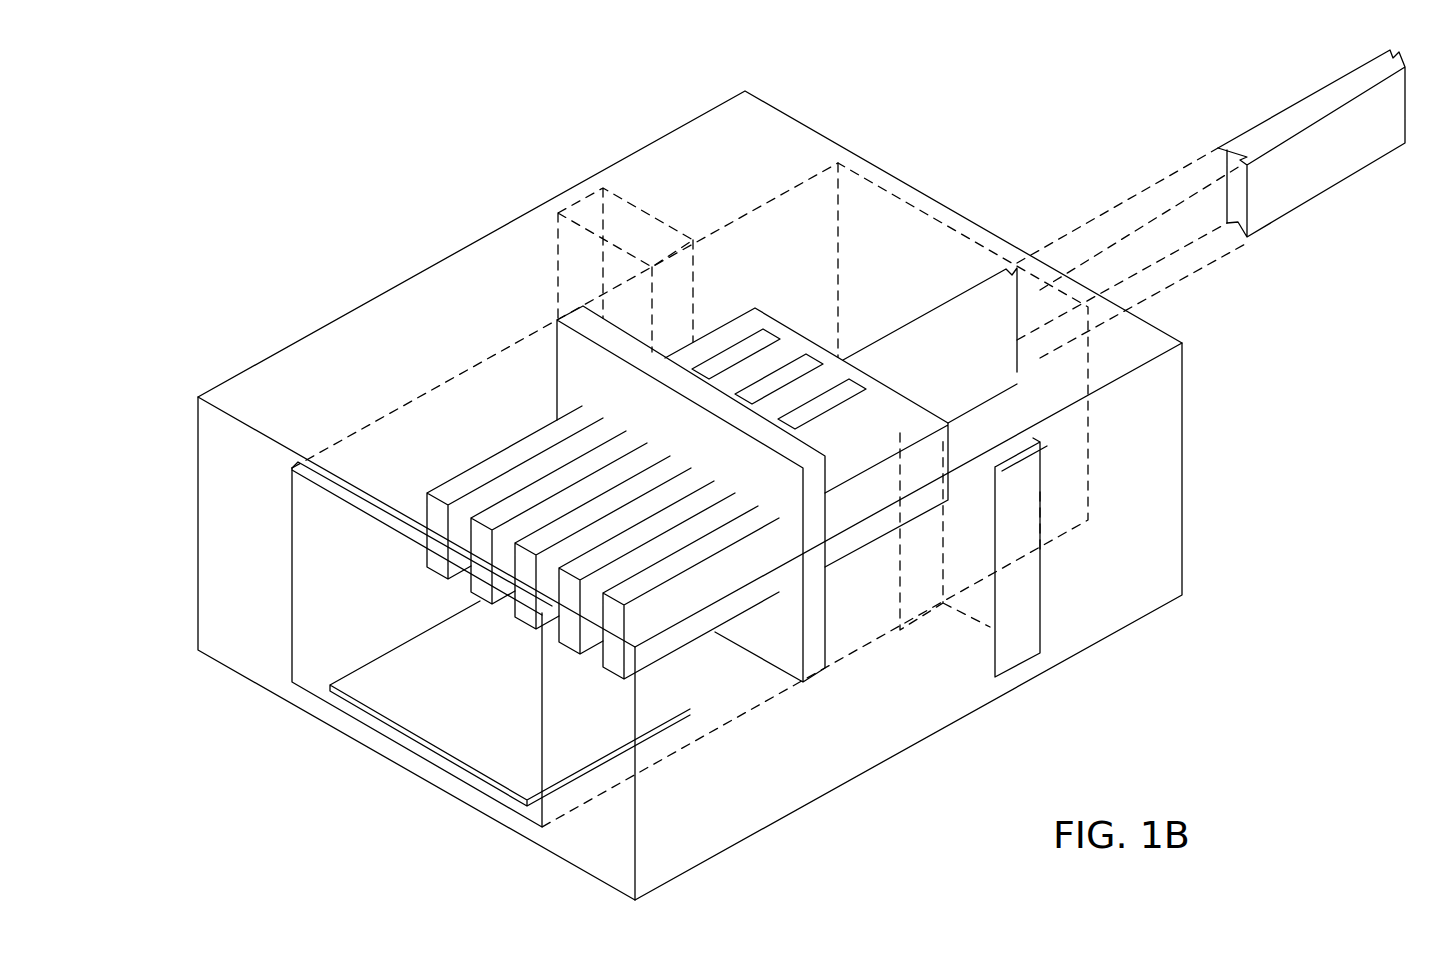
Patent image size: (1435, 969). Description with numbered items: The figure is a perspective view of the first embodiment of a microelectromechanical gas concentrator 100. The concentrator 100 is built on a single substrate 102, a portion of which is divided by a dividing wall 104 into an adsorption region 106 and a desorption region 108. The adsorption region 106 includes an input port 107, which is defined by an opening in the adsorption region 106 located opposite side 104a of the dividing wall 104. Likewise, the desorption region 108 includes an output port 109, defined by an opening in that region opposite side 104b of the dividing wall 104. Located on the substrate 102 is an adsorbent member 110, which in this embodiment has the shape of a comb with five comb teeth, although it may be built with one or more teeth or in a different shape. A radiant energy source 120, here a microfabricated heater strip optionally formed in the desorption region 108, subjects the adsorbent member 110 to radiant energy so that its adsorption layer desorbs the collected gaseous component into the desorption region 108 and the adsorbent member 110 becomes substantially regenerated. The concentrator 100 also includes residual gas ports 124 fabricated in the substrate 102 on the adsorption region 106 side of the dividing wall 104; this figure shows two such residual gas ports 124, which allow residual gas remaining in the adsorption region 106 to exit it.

The microelectromechanical gas concentrator 100 is at (387, 170).
The substrate 102 is at (317, 360).
The dividing wall 104 is at (815, 657).
The side of the dividing wall 104a is at (828, 642).
The side of the dividing wall 104b is at (783, 653).
The adsorption region 106 is at (813, 267).
The input port 107 is at (908, 208).
The desorption region 108 is at (428, 443).
The output port 109 is at (365, 517).
The adsorbent member 110 is at (903, 333).
The radiant energy source 120 is at (470, 745).
The residual gas port 124 is at (595, 217).